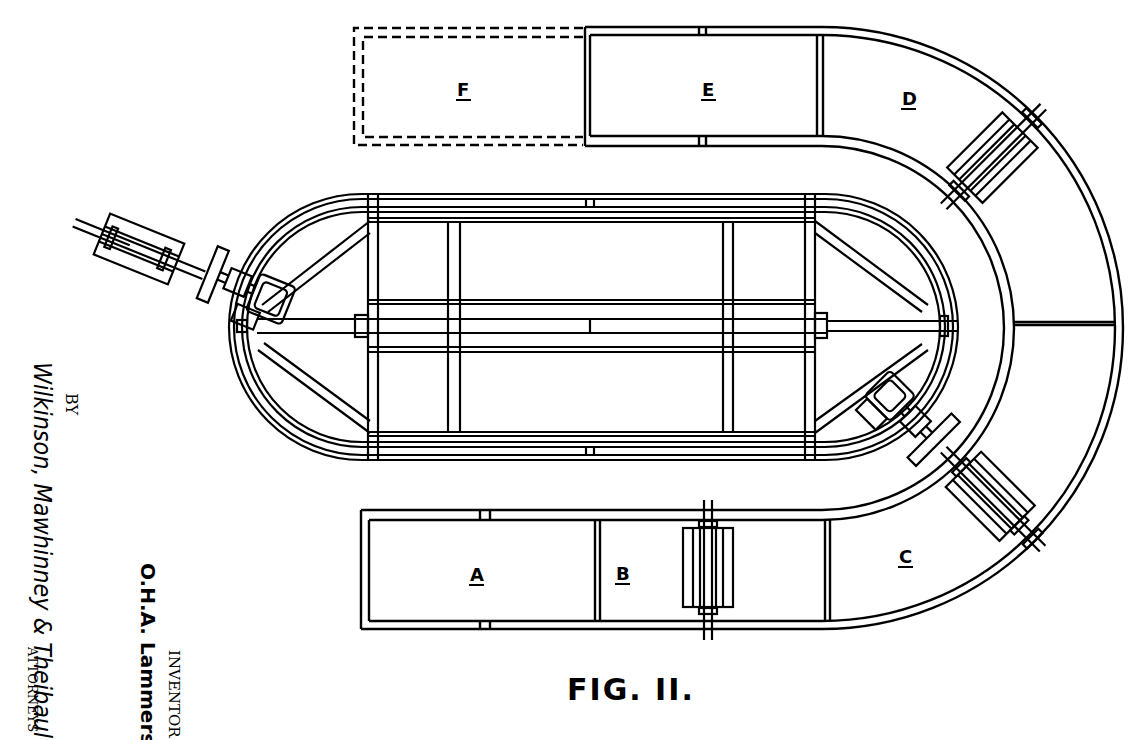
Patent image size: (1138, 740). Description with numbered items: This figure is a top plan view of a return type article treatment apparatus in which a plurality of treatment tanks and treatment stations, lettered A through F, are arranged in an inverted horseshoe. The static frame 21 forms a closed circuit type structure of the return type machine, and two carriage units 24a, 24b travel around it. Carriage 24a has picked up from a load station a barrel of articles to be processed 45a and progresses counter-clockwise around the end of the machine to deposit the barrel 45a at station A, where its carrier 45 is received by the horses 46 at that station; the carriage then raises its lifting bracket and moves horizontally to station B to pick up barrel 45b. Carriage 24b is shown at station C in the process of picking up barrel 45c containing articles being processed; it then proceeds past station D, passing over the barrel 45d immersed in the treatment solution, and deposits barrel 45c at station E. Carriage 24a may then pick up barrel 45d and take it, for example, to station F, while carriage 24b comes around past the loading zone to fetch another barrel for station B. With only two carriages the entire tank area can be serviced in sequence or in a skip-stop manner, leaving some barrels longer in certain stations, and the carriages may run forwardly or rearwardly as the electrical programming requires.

The static frame 21 is at (580, 224).
The carriage unit 24a is at (230, 295).
The carriage unit 24b is at (918, 413).
The carrier 45 is at (706, 560).
The barrel of articles to be processed 45a is at (140, 272).
The barrel 45b is at (725, 562).
The barrel containing articles being processed 45c is at (1000, 484).
The barrel 45d is at (1014, 155).
The horses 46 is at (703, 27).